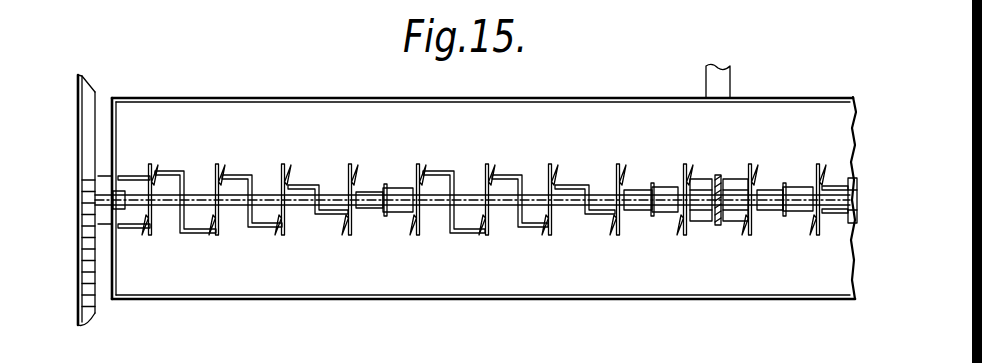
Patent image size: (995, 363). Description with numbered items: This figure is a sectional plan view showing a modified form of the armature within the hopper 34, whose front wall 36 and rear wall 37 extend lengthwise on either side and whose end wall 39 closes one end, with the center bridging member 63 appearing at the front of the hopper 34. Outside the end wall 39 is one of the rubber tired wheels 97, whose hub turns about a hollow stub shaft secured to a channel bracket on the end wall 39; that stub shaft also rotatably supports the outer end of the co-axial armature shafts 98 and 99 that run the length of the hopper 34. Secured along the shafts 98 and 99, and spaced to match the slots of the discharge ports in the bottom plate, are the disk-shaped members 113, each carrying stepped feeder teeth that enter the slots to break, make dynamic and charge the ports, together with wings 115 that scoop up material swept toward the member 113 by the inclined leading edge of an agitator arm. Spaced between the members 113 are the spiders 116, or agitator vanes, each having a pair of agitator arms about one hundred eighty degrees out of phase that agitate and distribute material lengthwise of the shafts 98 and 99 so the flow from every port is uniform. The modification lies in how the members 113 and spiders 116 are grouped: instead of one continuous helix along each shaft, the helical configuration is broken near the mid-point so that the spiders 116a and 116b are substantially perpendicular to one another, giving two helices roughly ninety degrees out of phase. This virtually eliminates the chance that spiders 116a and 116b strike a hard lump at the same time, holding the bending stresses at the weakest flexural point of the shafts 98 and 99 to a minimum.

The hopper 34 is at (484, 191).
The front wall 36 is at (310, 98).
The rear wall 37 is at (355, 300).
The end wall 39 is at (116, 142).
The center bridging member 63 is at (730, 76).
The rubber tired wheel 97 is at (92, 315).
The armature shaft 98 is at (598, 193).
The armature shaft 99 is at (833, 196).
The disk-shaped member 113 is at (415, 172).
The wing 115 is at (718, 228).
The spider 116 is at (242, 173).
The spider 116a is at (392, 207).
The spider 116b is at (446, 234).